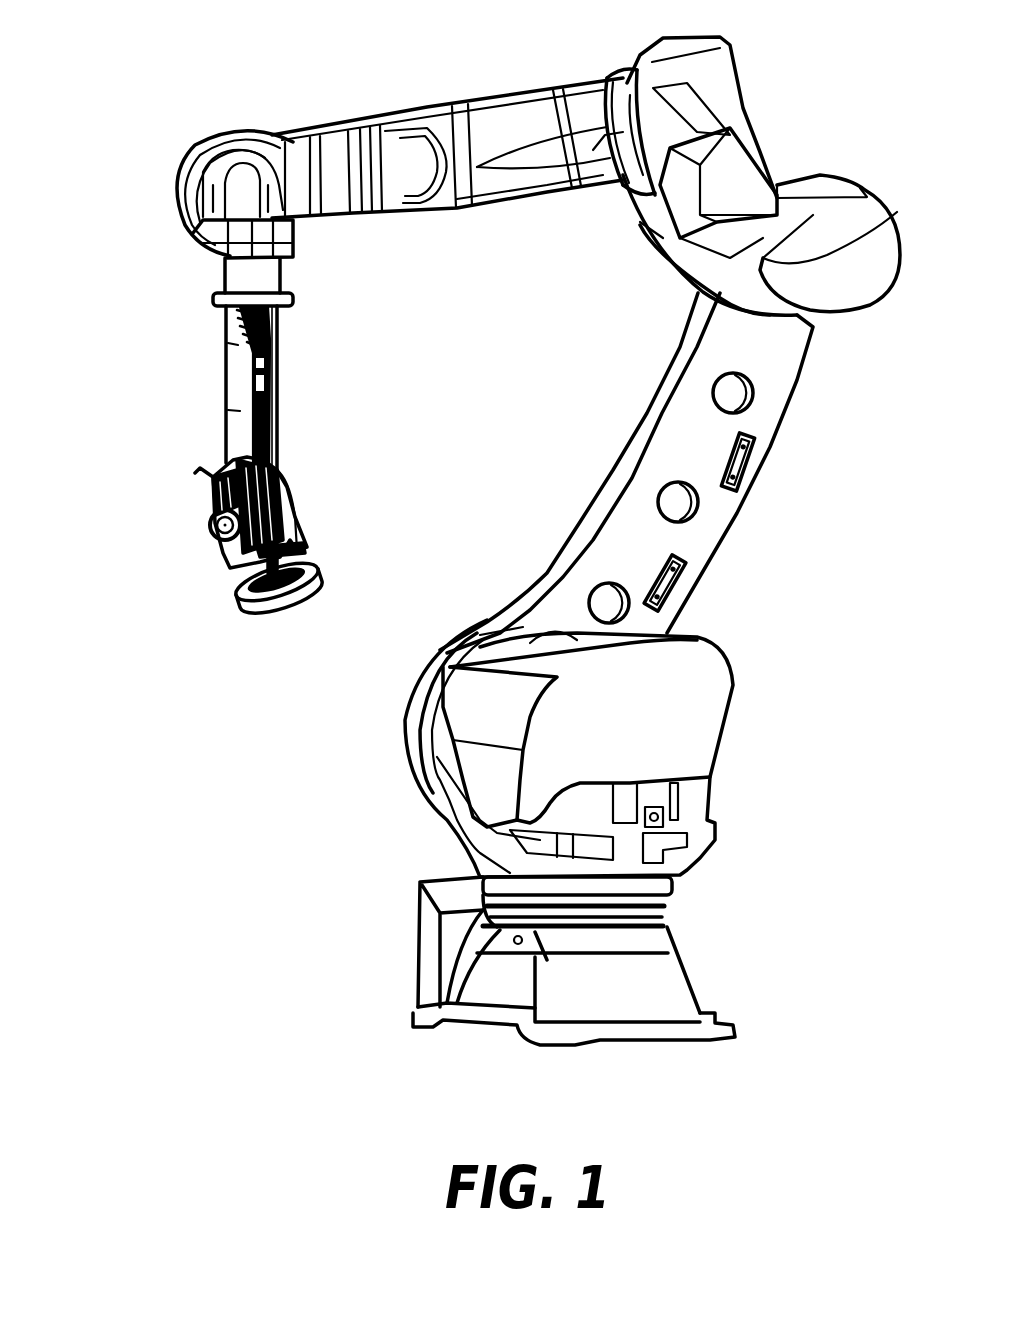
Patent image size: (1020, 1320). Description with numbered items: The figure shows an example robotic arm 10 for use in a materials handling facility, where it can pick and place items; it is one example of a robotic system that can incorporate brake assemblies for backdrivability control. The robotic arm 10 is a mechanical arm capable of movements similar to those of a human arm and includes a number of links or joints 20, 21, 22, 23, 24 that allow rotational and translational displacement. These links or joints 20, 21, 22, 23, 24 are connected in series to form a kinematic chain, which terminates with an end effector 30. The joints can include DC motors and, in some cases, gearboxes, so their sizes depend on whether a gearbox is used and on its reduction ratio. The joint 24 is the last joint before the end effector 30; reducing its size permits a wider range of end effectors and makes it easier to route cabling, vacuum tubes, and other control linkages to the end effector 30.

The robotic arm 10 is at (106, 103).
The link or joint 20 is at (413, 712).
The link or joint 21 is at (830, 185).
The link or joint 22 is at (620, 75).
The link or joint 23 is at (206, 140).
The joint 24 is at (213, 528).
The end effector 30 is at (310, 583).